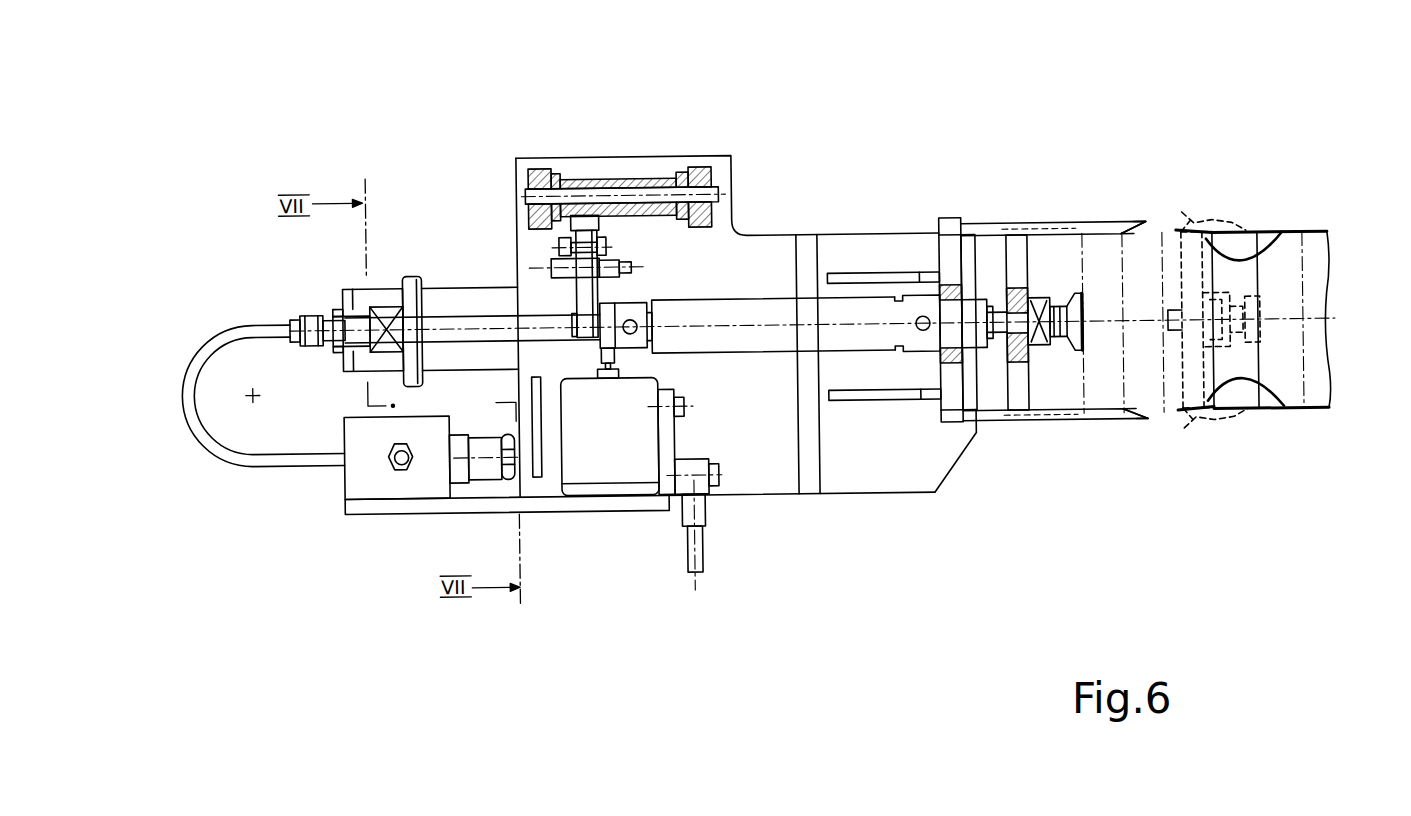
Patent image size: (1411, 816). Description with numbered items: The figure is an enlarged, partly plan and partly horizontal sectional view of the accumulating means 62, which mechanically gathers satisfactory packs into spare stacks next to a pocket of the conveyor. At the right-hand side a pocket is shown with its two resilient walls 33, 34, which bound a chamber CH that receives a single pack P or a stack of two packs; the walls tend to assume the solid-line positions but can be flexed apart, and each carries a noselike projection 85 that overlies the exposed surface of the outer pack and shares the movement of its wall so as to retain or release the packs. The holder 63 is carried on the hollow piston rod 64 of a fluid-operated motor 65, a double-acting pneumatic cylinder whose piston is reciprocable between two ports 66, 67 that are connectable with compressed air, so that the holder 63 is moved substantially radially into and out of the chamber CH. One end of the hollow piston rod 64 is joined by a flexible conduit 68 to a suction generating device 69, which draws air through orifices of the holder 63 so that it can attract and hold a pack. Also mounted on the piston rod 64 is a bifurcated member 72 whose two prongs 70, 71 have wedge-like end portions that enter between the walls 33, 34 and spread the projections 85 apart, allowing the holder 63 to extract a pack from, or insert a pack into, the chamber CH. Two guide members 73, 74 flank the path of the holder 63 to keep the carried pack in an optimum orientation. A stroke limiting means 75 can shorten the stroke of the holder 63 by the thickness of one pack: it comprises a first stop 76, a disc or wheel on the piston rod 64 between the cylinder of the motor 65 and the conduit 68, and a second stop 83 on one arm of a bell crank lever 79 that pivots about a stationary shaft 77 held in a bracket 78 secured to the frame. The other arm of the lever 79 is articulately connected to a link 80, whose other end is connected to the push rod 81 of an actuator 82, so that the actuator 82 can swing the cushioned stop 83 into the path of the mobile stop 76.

The resilient wall 33 is at (1231, 238).
The resilient wall 34 is at (1232, 415).
The accumulating means 62 is at (862, 239).
The holder 63 is at (1084, 298).
The piston rod 64 is at (443, 319).
The fluid-operated motor 65 is at (765, 341).
The port 66 is at (632, 319).
The port 67 is at (923, 334).
The flexible conduit 68 is at (288, 463).
The suction generating device 69 is at (391, 483).
The prong 70 is at (1047, 230).
The prong 71 is at (1055, 418).
The bifurcated member 72 is at (1046, 390).
The guide member 73 is at (1115, 232).
The guide member 74 is at (1113, 421).
The stroke limiting means 75 is at (547, 296).
The first stop 76 is at (410, 272).
The stationary shaft 77 is at (518, 192).
The bracket 78 is at (547, 168).
The bell crank lever 79 is at (593, 168).
The link 80 is at (577, 293).
The push rod 81 is at (613, 366).
The actuator 82 is at (615, 458).
The second stop 83 is at (551, 267).
The noselike projection 85 is at (1284, 239).
The pack P is at (1240, 389).
The chamber CH is at (1249, 286).